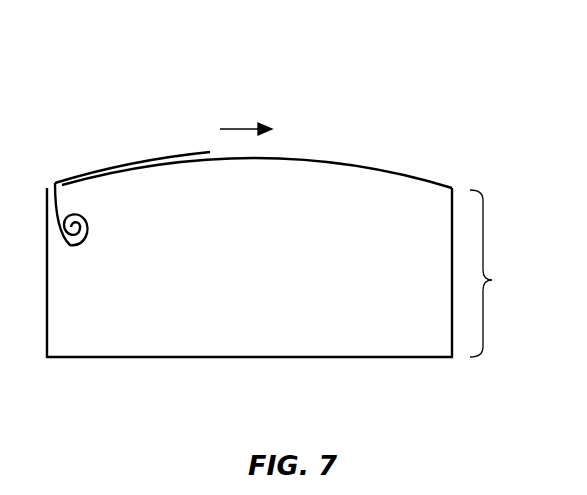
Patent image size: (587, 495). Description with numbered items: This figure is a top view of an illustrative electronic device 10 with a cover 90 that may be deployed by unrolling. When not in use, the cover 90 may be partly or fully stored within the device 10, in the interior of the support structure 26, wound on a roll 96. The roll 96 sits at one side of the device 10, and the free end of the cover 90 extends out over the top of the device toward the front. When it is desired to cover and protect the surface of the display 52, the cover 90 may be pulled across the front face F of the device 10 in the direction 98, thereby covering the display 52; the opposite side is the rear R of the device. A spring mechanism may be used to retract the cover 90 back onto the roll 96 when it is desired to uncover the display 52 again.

The electronic device 10 is at (507, 67).
The support structure 26 is at (497, 273).
The display 52 is at (417, 178).
The cover 90 is at (108, 163).
The roll 96 is at (90, 252).
The direction 98 is at (243, 127).
The front face F is at (350, 138).
The rear face R is at (363, 377).